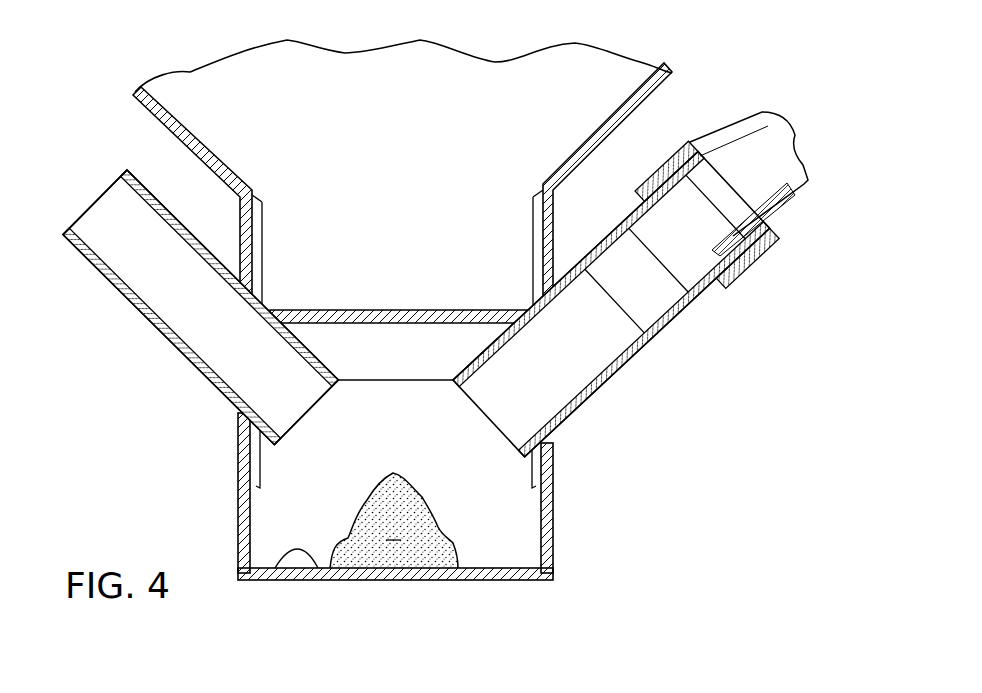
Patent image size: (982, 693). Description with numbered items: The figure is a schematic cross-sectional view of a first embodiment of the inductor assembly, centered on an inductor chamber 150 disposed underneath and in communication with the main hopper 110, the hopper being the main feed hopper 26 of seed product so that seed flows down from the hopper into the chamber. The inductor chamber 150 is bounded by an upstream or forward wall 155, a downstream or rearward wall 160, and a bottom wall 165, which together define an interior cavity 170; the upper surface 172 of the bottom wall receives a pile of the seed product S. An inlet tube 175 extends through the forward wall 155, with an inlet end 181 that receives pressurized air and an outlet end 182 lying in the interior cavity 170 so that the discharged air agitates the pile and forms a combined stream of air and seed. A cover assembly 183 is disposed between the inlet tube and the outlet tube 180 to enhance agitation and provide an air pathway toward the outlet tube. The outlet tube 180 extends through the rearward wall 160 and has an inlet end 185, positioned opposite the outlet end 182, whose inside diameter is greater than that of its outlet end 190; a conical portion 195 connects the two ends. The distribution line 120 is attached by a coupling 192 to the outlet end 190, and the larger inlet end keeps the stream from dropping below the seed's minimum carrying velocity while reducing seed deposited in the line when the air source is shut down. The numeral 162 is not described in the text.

The main feed hopper 26 is at (645, 112).
The main hopper 110 is at (152, 116).
The distribution line 120 is at (790, 154).
The inductor chamber 150 is at (428, 531).
The forward wall 155 is at (238, 527).
The rearward wall 160 is at (553, 562).
The valve cavity 162 is at (420, 376).
The bottom wall 165 is at (393, 580).
The interior cavity 170 is at (490, 490).
The upper surface 172 is at (283, 575).
The inlet tube 175 is at (205, 292).
The outlet tube 180 is at (614, 307).
The inlet end 181 is at (97, 204).
The outlet end 182 is at (310, 405).
The cover assembly 183 is at (333, 311).
The inlet end 185 is at (483, 343).
The outlet end 190 is at (708, 268).
The coupling 192 is at (765, 238).
The conical portion 195 is at (594, 246).